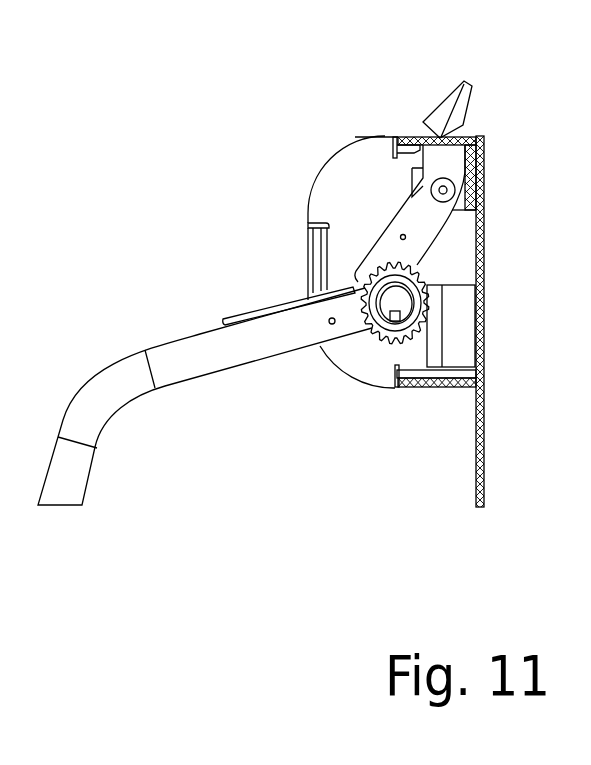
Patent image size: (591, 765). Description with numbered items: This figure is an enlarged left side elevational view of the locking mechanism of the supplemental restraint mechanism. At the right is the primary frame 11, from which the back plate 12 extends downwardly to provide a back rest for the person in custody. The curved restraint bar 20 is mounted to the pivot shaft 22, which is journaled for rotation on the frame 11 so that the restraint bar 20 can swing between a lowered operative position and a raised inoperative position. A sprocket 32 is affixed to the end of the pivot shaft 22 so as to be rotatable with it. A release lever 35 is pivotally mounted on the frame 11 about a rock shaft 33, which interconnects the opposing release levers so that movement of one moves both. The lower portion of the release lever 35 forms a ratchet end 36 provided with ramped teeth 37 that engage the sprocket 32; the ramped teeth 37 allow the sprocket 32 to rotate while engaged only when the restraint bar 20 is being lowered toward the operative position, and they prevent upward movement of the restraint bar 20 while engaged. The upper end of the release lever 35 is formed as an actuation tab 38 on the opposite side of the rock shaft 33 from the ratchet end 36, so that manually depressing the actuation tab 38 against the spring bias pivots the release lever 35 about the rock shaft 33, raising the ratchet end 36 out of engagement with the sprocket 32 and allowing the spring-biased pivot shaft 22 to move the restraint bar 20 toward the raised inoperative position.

The primary frame 11 is at (484, 145).
The back plate 12 is at (485, 455).
The curved restraint bar 20 is at (83, 432).
The pivot shaft 22 is at (377, 319).
The sprocket 32 is at (430, 305).
The rock shaft 33 is at (451, 185).
The release lever 35 is at (425, 220).
The ratchet end 36 is at (356, 277).
The ramped teeth 37 is at (367, 290).
The actuation tab 38 is at (453, 113).